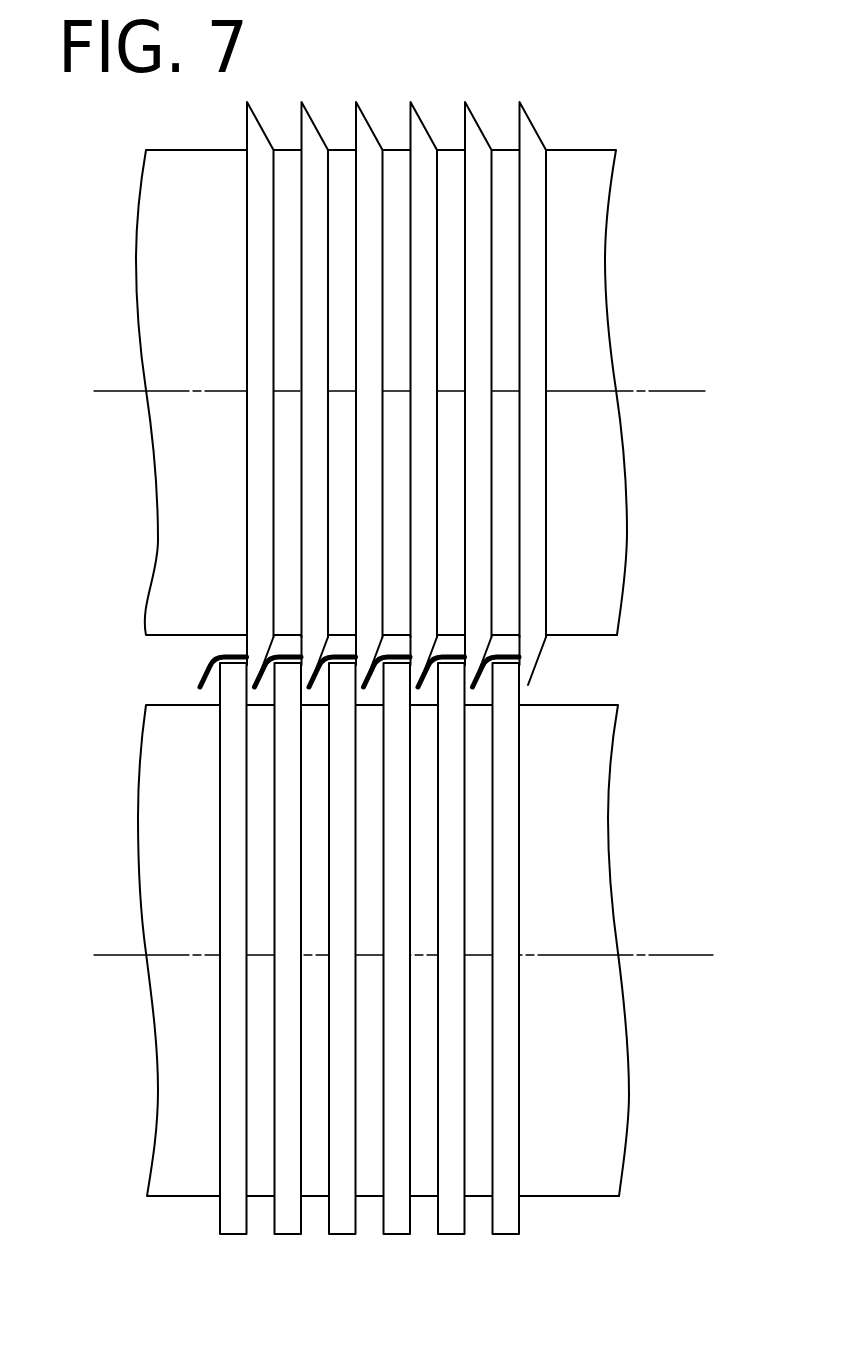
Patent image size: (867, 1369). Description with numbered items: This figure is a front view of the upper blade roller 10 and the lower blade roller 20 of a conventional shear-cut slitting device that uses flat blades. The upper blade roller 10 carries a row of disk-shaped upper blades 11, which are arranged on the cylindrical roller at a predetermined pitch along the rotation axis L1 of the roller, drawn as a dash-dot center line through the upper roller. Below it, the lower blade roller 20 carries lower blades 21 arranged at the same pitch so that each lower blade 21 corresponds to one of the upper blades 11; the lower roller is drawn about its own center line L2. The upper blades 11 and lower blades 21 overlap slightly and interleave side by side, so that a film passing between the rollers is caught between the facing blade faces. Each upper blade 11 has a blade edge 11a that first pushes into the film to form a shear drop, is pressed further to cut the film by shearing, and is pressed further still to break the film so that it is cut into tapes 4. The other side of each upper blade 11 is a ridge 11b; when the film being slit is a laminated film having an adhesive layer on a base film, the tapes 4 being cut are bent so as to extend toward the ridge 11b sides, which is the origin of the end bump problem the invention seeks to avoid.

The upper blade roller 10 is at (627, 527).
The upper blade 11 is at (548, 437).
The blade edge 11a is at (520, 690).
The ridge 11b is at (492, 637).
The tape 4 is at (500, 655).
The lower blade roller 20 is at (629, 1077).
The lower blade 21 is at (519, 1023).
The rotation axis L1 is at (415, 391).
The rotation axis of lower blade roller L2 is at (420, 955).